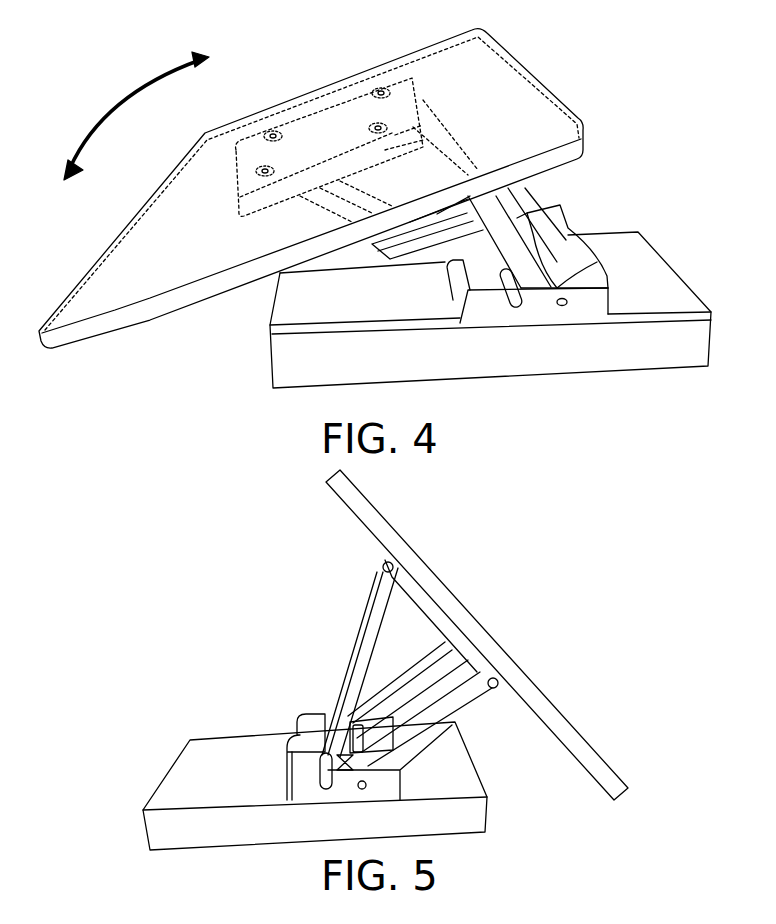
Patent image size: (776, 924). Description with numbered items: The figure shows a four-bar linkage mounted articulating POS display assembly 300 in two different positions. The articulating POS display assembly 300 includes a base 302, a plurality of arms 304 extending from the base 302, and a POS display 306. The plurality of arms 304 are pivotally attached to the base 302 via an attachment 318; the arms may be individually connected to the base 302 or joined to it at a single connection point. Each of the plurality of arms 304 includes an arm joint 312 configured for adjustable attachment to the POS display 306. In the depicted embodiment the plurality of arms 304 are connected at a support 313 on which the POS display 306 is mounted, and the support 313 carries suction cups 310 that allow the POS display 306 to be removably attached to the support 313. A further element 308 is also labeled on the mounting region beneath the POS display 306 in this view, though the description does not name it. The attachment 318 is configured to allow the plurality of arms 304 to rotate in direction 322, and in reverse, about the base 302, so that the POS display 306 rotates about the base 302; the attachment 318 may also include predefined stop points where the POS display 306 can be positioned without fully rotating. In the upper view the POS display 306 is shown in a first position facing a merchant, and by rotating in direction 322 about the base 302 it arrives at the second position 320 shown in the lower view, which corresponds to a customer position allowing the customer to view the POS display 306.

In FIG. 5, the articulating POS display assembly 300 is at (409, 667).
In FIG. 4, the base 302 is at (680, 297).
In FIG. 5, the base 302 is at (442, 825).
In FIG. 4, the plurality of arms 304 is at (544, 192).
In FIG. 5, the plurality of arms 304 is at (337, 612).
In FIG. 4, the POS display 306 is at (520, 108).
In FIG. 4, the bracket 308 is at (328, 127).
In FIG. 5, the bracket 308 is at (418, 630).
In FIG. 4, the suction cups 310 is at (265, 171).
In FIG. 4, the arm joint 312 is at (424, 82).
In FIG. 5, the arm joint 312 is at (359, 557).
In FIG. 4, the support 313 is at (403, 143).
In FIG. 4, the attachment 318 is at (581, 218).
In FIG. 5, the attachment 318 is at (286, 713).
In FIG. 5, the second position 320 is at (596, 603).
In FIG. 4, the direction 322 is at (117, 100).